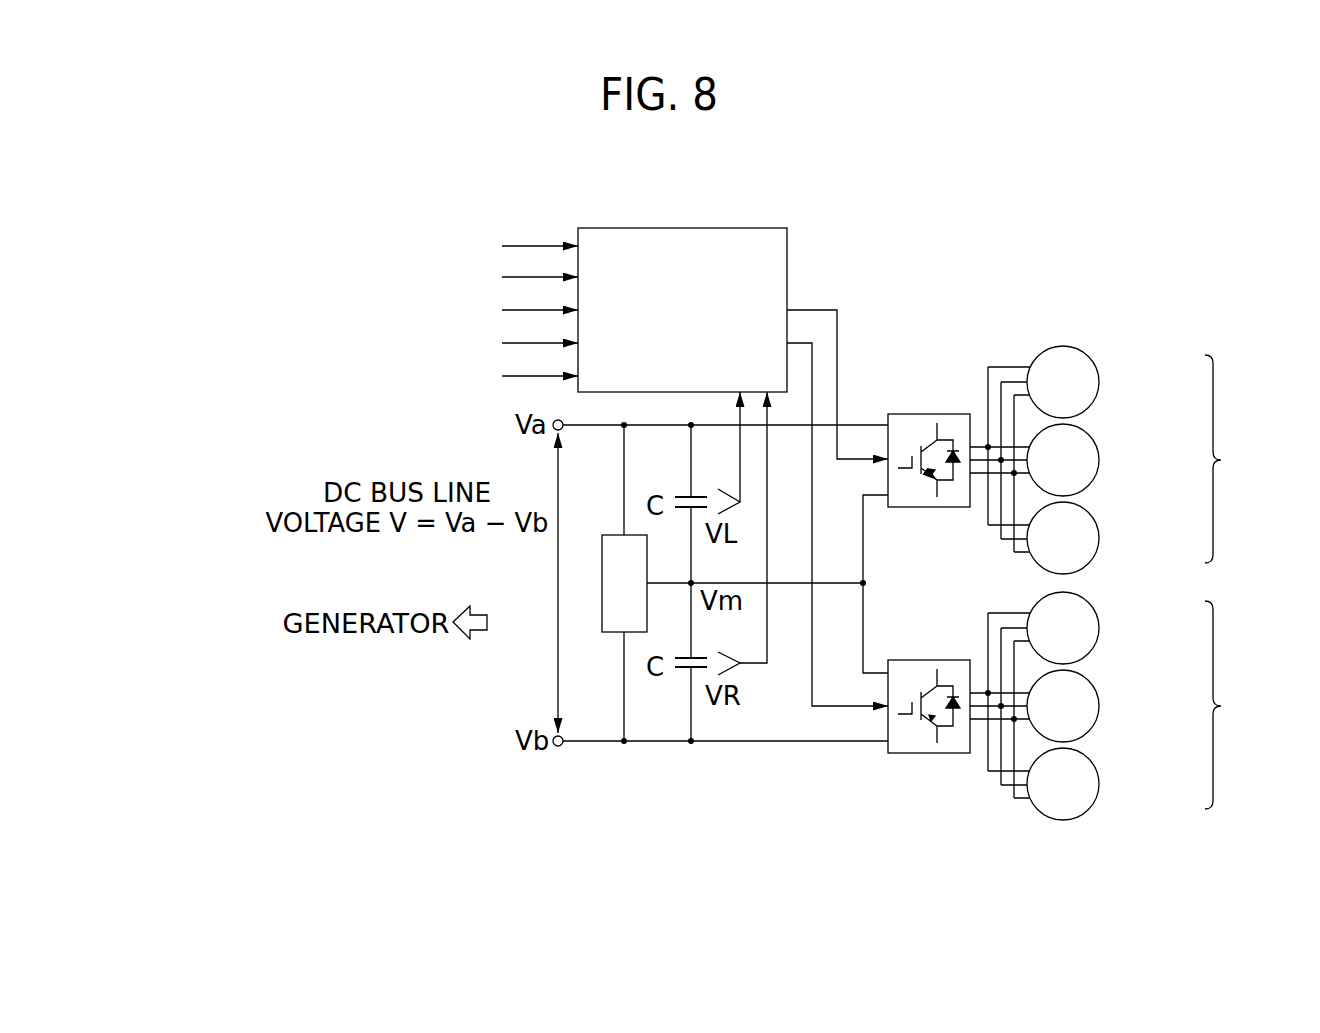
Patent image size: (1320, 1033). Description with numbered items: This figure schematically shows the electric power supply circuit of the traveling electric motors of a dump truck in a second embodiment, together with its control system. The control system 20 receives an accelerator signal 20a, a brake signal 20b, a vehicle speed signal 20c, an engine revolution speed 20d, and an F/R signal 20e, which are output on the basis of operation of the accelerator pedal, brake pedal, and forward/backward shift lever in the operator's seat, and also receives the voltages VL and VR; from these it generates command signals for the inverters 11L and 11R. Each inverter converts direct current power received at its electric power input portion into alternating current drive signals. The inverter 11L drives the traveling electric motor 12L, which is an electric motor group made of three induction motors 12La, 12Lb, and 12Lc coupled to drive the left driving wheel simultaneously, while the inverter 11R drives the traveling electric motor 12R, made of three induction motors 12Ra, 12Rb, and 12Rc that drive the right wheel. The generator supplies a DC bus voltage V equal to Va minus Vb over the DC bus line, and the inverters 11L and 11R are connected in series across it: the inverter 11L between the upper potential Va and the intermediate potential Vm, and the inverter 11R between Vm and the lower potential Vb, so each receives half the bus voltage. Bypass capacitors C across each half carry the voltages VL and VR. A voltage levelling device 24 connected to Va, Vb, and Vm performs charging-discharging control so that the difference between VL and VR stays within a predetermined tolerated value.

The control system 20 is at (757, 228).
The accelerator signal 20a is at (290, 249).
The brake signal 20b is at (402, 280).
The vehicle speed signal 20c is at (279, 313).
The engine revolution speed 20d is at (113, 346).
The F/R signal 20e is at (438, 379).
The voltage levelling device 24 is at (610, 535).
The inverter 11L is at (922, 414).
The inverter 11R is at (922, 660).
The electric motor 12La is at (1100, 382).
The electric motor 12Lb is at (1100, 460).
The electric motor 12Lc is at (1100, 538).
The traveling electric motor 12L is at (1241, 459).
The electric motor 12Ra is at (1100, 628).
The electric motor 12Rb is at (1100, 706).
The electric motor 12Rc is at (1100, 784).
The traveling electric motor 12R is at (1243, 705).